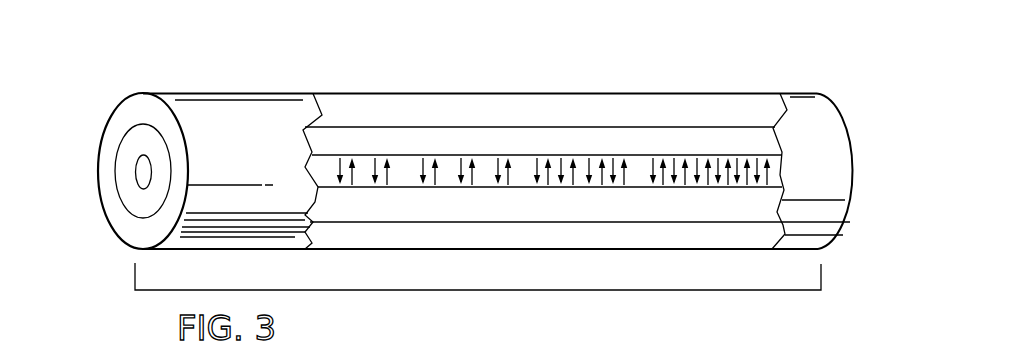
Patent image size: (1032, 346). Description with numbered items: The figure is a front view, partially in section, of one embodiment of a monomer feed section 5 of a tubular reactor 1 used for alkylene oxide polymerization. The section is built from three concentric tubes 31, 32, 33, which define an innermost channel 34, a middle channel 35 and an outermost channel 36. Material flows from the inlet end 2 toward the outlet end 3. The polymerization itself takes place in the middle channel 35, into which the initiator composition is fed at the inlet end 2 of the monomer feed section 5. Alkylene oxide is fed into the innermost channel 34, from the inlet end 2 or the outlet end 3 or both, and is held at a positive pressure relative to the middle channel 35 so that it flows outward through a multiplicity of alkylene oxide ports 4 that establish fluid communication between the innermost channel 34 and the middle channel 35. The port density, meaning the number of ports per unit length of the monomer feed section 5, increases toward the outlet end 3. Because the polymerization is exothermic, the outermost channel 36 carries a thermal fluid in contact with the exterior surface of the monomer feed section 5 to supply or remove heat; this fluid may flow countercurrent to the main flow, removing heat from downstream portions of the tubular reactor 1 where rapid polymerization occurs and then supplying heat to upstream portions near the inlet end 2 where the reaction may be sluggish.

The tubular reactor 1 is at (767, 62).
The inlet end 2 is at (87, 177).
The outlet end 3 is at (846, 230).
The alkylene oxide ports 4 is at (612, 163).
The monomer feed section 5 is at (458, 290).
The concentric tube 31 is at (115, 223).
The concentric tube 32 is at (133, 127).
The concentric tube 33 is at (120, 100).
The innermost channel 34 is at (140, 167).
The middle channel 35 is at (127, 175).
The outermost channel 36 is at (112, 183).